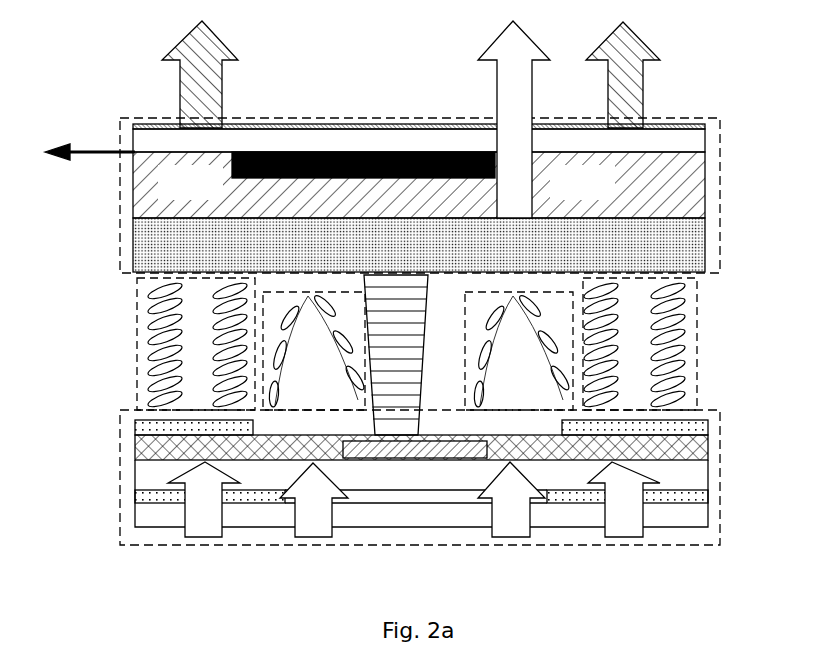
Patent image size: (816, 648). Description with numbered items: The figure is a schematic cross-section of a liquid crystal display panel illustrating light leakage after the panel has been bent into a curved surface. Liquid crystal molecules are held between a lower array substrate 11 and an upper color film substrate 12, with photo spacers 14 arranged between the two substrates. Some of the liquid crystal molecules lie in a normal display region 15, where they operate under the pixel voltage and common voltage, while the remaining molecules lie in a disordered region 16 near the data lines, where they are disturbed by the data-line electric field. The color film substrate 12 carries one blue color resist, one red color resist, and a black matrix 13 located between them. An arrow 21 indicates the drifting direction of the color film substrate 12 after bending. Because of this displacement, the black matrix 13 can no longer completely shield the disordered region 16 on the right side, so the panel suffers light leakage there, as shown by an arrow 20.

The array substrate 11 is at (720, 462).
The color film substrate 12 is at (722, 195).
The black matrix 13 is at (284, 152).
The photo spacers 14 is at (400, 392).
The normal display region 15 is at (137, 297).
The disordered region 16 is at (263, 358).
The arrow 20 is at (520, 48).
The arrow 21 is at (88, 150).